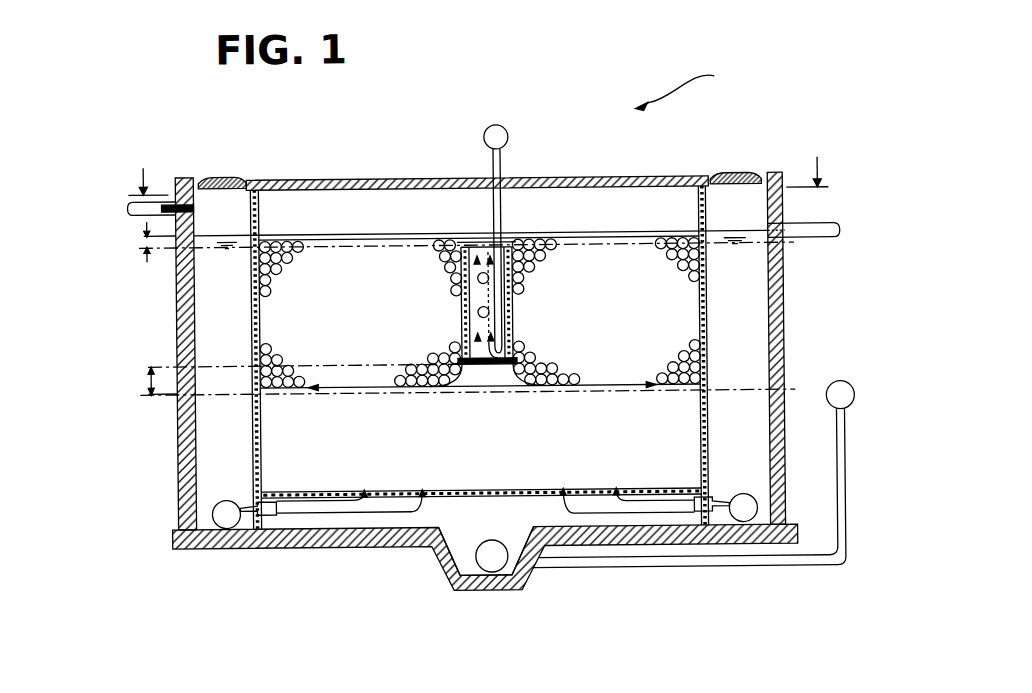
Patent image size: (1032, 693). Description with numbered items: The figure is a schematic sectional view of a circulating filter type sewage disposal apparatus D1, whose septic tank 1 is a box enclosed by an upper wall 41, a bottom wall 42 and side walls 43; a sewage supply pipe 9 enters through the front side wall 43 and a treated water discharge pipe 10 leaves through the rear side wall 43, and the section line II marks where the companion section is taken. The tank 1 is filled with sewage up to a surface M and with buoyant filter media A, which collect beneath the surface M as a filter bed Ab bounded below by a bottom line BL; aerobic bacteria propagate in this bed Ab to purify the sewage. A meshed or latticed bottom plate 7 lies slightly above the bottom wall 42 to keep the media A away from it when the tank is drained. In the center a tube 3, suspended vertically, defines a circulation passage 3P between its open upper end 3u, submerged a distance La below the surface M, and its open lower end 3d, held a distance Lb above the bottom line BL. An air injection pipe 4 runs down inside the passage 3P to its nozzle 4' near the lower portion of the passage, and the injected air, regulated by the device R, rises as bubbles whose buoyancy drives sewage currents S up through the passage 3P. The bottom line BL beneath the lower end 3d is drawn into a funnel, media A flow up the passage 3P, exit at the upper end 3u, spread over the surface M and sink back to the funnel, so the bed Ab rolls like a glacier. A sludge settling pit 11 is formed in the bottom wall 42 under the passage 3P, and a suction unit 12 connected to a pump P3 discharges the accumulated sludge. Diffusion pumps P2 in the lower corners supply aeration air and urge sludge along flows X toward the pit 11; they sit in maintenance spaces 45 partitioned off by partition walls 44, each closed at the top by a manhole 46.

The septic tank 1 is at (474, 352).
The tube 3 is at (482, 295).
The upper end of tube 3u is at (480, 240).
The circulation passage 3P is at (462, 310).
The lower end of tube 3d is at (490, 367).
The air injection pipe 4 is at (476, 249).
The nozzle 4' is at (445, 305).
The meshed or latticed bottom plate 7 is at (546, 490).
The sewage supply pipe 9 is at (131, 208).
The treated water discharge pipe 10 is at (828, 240).
The sludge settling pit 11 is at (458, 568).
The suction unit 12 is at (490, 574).
The upper wall 41 is at (380, 198).
The bottom wall 42 is at (366, 548).
The side walls 43 is at (195, 420).
The partition walls 44 is at (252, 308).
The maintenance spaces 45 is at (247, 464).
The manholes 46 is at (231, 176).
The filter media A is at (536, 268).
The filter bed Ab is at (398, 388).
The bottom line of filter bed BL is at (520, 396).
The distance from surface to upper end La is at (148, 246).
The distance from lower end to bottom line Lb is at (151, 379).
The surface of the sewage M is at (613, 233).
The sewage currents S is at (462, 292).
The flow passage X is at (300, 527).
The regulator R is at (496, 137).
The pump P2 is at (484, 507).
The pump P3 is at (693, 474).
The circulating filter type sewage disposal apparatus D1 is at (690, 82).
The section line II is at (478, 165).